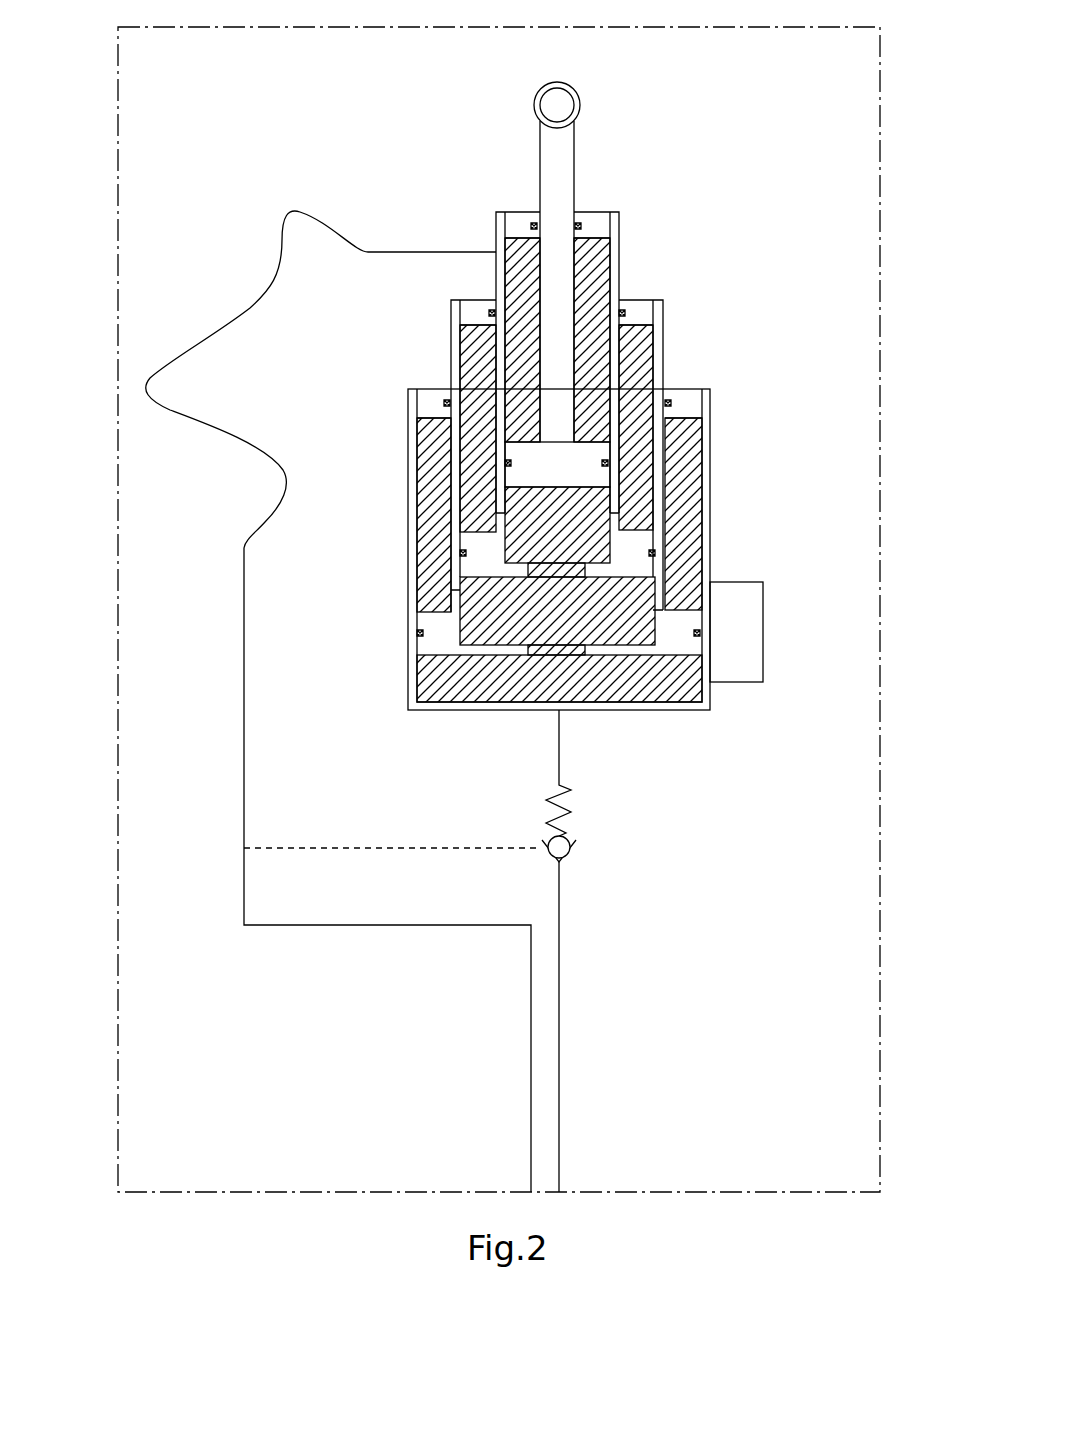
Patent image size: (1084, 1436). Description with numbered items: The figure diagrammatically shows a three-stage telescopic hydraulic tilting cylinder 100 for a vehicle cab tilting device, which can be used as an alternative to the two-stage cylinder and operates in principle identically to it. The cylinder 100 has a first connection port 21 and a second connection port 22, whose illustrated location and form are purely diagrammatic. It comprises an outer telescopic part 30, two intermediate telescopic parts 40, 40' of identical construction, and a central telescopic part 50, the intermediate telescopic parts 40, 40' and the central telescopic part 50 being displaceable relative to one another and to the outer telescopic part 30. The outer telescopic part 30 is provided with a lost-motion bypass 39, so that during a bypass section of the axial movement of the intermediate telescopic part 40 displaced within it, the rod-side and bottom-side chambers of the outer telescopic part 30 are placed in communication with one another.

The first connection port 21 is at (553, 717).
The second connection port 22 is at (480, 250).
The outer telescopic part 30 is at (729, 452).
The lost-motion bypass 39 is at (763, 622).
The intermediate telescopic part 40 is at (615, 477).
The intermediate telescopic part 40' is at (620, 394).
The central telescopic part 50 is at (613, 143).
The three-stage tilting cylinder 100 is at (675, 736).